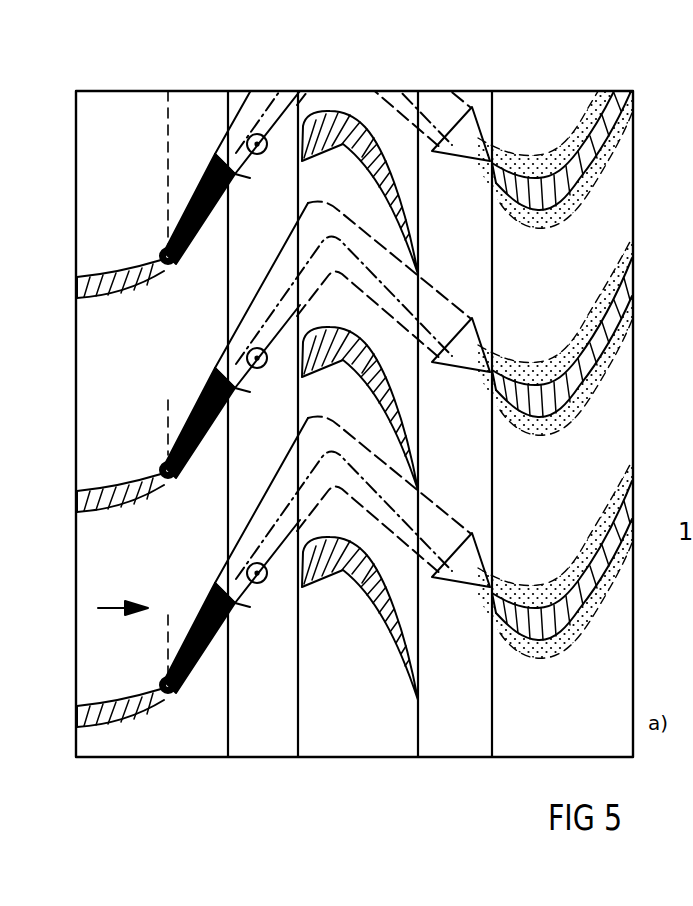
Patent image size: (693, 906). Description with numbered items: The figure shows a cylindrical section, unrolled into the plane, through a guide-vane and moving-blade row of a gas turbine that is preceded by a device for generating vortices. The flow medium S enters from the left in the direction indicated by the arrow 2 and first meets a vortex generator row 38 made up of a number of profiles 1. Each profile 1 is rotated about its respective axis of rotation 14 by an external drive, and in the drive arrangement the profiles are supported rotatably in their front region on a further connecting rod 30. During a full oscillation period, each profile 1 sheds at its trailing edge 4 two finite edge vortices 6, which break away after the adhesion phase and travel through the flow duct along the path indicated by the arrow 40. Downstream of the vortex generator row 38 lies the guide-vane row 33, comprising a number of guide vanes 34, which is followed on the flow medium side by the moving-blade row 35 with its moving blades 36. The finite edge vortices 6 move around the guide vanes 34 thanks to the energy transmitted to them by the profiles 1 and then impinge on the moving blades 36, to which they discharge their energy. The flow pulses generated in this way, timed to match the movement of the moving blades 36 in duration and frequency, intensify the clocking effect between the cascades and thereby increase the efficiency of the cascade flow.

The profile 1 is at (181, 687).
The arrow 2 is at (112, 607).
The trailing edge 4 is at (230, 605).
The finite edge vortices 6 is at (230, 558).
The axis of rotation 14 is at (165, 698).
The further connecting rod 30 is at (585, 336).
The guide-vane row 33 is at (377, 743).
The guide vane 34 is at (384, 627).
The moving-blade row 35 is at (570, 740).
The moving blade 36 is at (558, 642).
The vortex generator row 38 is at (153, 743).
The arrow 40 is at (418, 498).